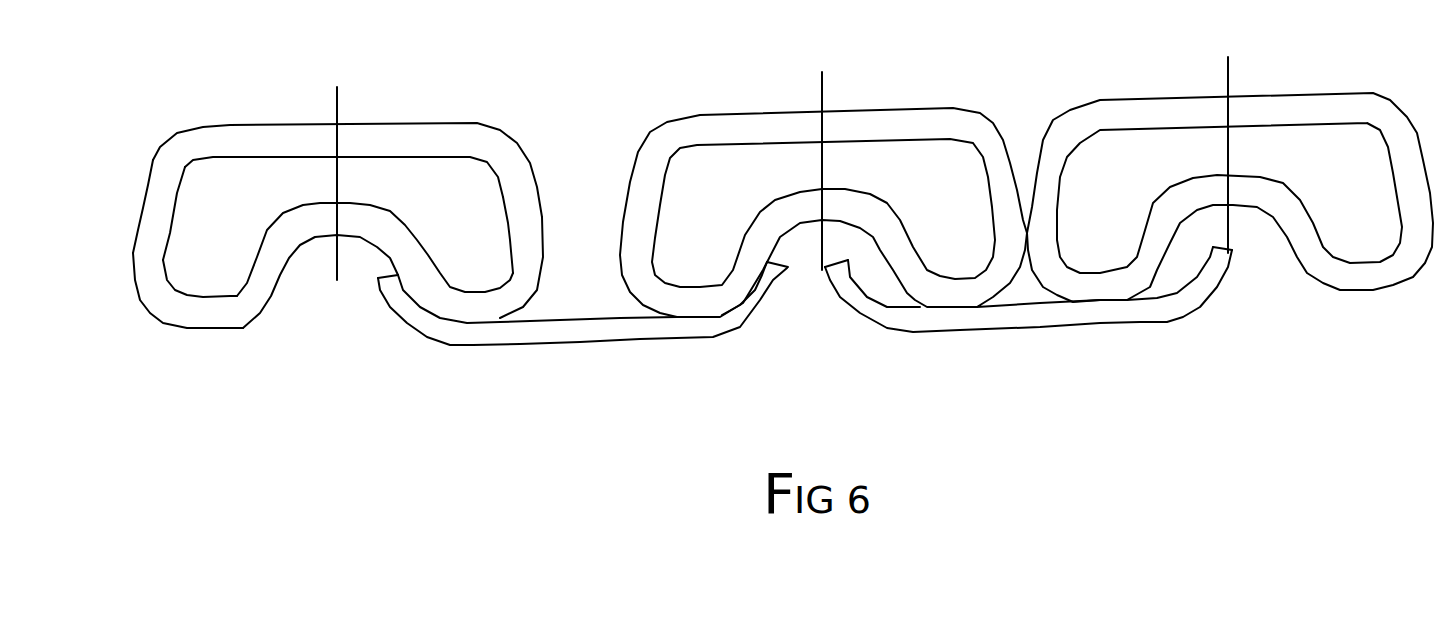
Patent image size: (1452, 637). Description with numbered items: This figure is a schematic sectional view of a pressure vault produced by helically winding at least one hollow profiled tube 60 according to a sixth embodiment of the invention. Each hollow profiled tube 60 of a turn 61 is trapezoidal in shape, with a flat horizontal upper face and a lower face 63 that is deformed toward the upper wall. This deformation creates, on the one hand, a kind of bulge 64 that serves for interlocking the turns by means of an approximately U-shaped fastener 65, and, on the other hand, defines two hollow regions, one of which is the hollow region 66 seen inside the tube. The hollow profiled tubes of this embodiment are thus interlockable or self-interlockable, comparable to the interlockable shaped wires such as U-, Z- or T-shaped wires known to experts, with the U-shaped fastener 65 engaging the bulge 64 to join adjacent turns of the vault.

The hollow profiled tube 60 is at (310, 213).
The turn 61 is at (428, 108).
The lower face 63 is at (218, 313).
The bulge 64 is at (377, 220).
The U-shaped fastener 65 is at (572, 333).
The hollow region 66 is at (193, 260).